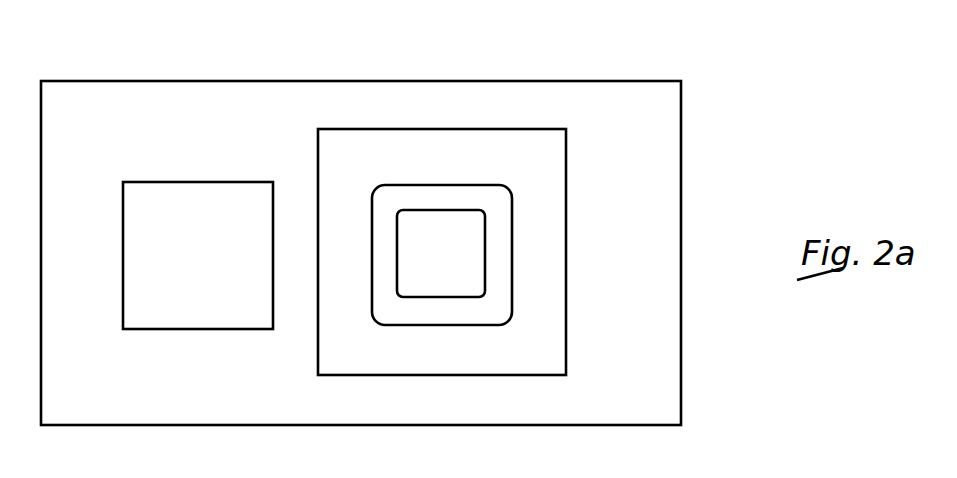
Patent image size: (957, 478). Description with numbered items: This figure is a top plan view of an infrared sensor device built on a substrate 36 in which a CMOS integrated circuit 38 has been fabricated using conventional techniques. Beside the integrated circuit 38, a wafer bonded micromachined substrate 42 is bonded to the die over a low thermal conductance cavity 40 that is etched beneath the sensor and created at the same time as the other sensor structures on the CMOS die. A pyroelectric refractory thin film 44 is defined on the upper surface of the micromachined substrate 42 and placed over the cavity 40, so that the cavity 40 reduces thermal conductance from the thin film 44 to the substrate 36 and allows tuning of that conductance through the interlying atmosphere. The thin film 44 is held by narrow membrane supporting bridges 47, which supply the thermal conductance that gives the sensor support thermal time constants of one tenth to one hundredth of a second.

The substrate 36 is at (127, 93).
The CMOS integrated circuit 38 is at (192, 190).
The wafer bonded micromachined substrate 42 is at (567, 241).
The membrane supporting bridges 47 is at (382, 185).
The pyroelectric refractory thin film 44 is at (448, 227).
The cavity 40 is at (450, 312).